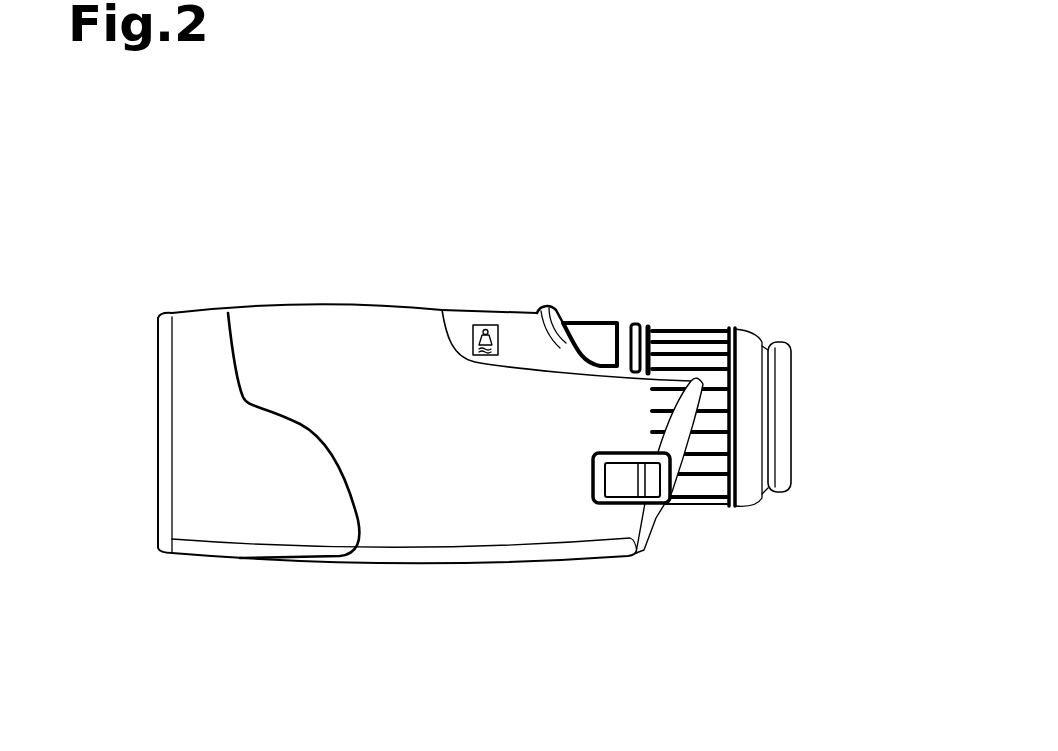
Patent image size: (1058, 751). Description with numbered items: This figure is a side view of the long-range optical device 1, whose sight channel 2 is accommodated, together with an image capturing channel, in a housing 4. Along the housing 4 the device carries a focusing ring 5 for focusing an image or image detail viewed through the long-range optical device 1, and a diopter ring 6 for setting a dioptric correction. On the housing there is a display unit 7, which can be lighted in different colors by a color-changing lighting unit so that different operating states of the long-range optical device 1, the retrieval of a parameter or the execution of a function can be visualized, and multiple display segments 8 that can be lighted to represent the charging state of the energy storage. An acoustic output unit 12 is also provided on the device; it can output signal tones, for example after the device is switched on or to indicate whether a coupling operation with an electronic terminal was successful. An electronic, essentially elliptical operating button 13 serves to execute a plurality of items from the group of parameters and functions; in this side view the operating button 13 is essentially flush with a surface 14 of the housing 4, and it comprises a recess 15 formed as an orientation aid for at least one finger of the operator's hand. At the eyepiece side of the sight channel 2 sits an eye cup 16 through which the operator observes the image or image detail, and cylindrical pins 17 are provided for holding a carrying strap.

The long-range optical device 1 is at (815, 133).
The sight channel 2 is at (803, 402).
The housing 4 is at (437, 513).
The focusing ring 5 is at (706, 328).
The diopter ring 6 is at (750, 343).
The display unit 7 is at (517, 302).
The display segments 8 is at (478, 305).
The acoustic output unit 12 is at (450, 320).
The operating button 13 is at (595, 345).
The surface 14 is at (627, 325).
The recess 15 is at (583, 323).
The eye cup 16 is at (783, 473).
The cylindrical pins 17 is at (653, 513).